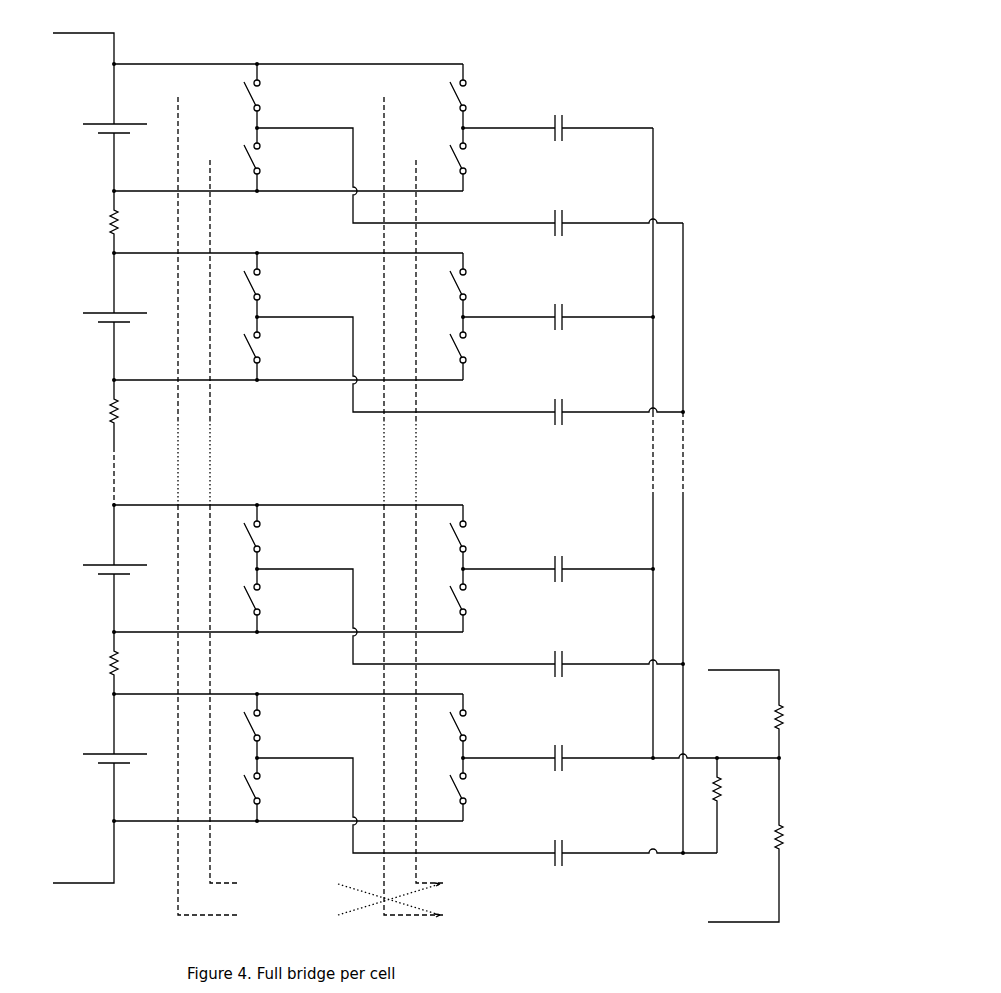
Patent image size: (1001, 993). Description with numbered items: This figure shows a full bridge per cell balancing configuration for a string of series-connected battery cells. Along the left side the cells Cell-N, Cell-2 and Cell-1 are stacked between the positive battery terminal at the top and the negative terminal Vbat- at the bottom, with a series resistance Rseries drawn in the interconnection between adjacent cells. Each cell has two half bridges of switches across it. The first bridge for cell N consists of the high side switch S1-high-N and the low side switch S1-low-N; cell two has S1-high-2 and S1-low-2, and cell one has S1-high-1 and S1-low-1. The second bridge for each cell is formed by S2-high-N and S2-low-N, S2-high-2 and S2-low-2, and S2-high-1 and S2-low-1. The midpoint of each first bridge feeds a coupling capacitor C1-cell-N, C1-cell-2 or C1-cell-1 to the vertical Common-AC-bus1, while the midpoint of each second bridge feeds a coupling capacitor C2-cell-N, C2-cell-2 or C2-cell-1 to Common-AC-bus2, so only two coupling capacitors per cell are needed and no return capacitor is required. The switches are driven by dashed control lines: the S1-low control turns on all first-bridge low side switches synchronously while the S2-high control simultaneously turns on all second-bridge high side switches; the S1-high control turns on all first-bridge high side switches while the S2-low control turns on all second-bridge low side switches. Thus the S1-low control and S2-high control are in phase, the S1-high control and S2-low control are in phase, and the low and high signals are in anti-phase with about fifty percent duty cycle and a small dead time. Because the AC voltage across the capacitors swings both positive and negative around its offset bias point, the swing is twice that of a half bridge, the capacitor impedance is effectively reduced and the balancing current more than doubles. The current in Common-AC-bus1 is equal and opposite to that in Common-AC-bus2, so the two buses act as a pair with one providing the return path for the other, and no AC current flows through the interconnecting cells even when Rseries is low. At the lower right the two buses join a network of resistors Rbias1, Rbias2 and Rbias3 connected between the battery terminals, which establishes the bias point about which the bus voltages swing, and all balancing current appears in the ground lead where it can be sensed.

The battery negative terminal Vbat- is at (83, 853).
The series resistance Rseries is at (92, 442).
The cell Cell-N is at (99, 115).
The cell Cell-2 is at (99, 556).
The cell Cell-1 is at (99, 745).
The high side switch of the first bridge S1-high-N is at (178, 97).
The low side switch of the first bridge S1-low-N is at (210, 160).
The high side switch of the first bridge S1-high-2 is at (178, 538).
The low side switch of the first bridge S1-low-2 is at (210, 601).
The high side switch of the first bridge S1-high-1 is at (178, 727).
The low side switch of the first bridge S1-low-1 is at (210, 790).
The high side switch of the second bridge S2-high-N is at (384, 97).
The low side switch of the second bridge S2-low-N is at (416, 160).
The high side switch of the second bridge S2-high-2 is at (384, 538).
The low side switch of the second bridge S2-low-2 is at (416, 601).
The high side switch of the second bridge S2-high-1 is at (384, 727).
The low side switch of the second bridge S2-low-1 is at (416, 790).
The coupling capacitor C2-cell-N is at (604, 127).
The coupling capacitor C2-cell-2 is at (605, 568).
The coupling capacitor C2-cell-1 is at (605, 757).
The coupling capacitor C1-cell-N is at (619, 222).
The coupling capacitor C1-cell-2 is at (620, 663).
The coupling capacitor C1-cell-1 is at (620, 852).
The AC bus Common-AC-bus2 is at (699, 110).
The AC bus Common-AC-bus1 is at (729, 205).
The bias resistor 1 Rbias1 is at (745, 700).
The bias resistor 2 Rbias2 is at (745, 840).
The bias resistor 3 Rbias3 is at (737, 805).
The S1-high control signal S1-high control is at (256, 510).
The S1-low control signal S1-low control is at (269, 525).
The S2-high control signal S2-high control is at (461, 510).
The S2-low control signal S2-low control is at (474, 525).